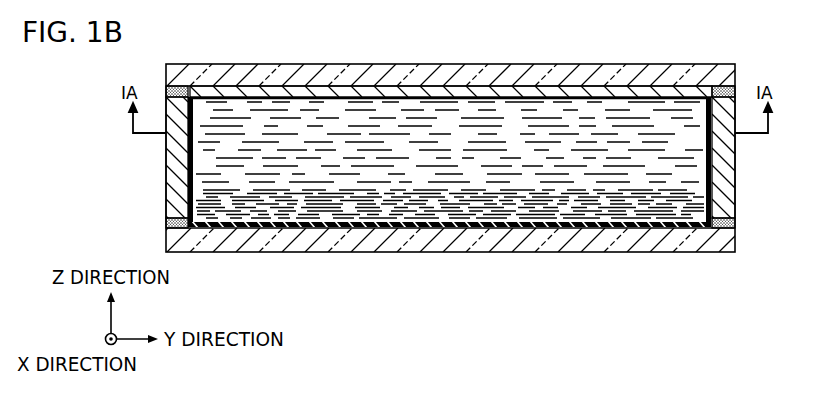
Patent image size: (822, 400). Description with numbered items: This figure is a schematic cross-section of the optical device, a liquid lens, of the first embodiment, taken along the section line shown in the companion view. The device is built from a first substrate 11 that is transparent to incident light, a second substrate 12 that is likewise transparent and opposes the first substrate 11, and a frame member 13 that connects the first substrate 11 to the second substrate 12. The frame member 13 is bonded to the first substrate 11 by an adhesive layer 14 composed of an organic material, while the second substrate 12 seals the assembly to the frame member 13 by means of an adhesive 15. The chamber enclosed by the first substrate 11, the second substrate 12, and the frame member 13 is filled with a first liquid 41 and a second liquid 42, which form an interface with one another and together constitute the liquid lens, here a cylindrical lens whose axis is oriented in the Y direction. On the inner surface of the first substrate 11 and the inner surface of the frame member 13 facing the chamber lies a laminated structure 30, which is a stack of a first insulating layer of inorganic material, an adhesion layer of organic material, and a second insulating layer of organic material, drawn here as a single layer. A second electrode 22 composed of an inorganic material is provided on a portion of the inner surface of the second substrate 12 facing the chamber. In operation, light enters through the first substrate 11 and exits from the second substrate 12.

The first substrate 11 is at (597, 240).
The second substrate 12 is at (648, 76).
The frame member 13 is at (172, 190).
The adhesive layer 14 is at (168, 225).
The adhesive 15 is at (175, 90).
The second electrode 22 is at (279, 95).
The laminated structure 30 is at (327, 228).
The first liquid 41 is at (475, 215).
The second liquid 42 is at (538, 107).